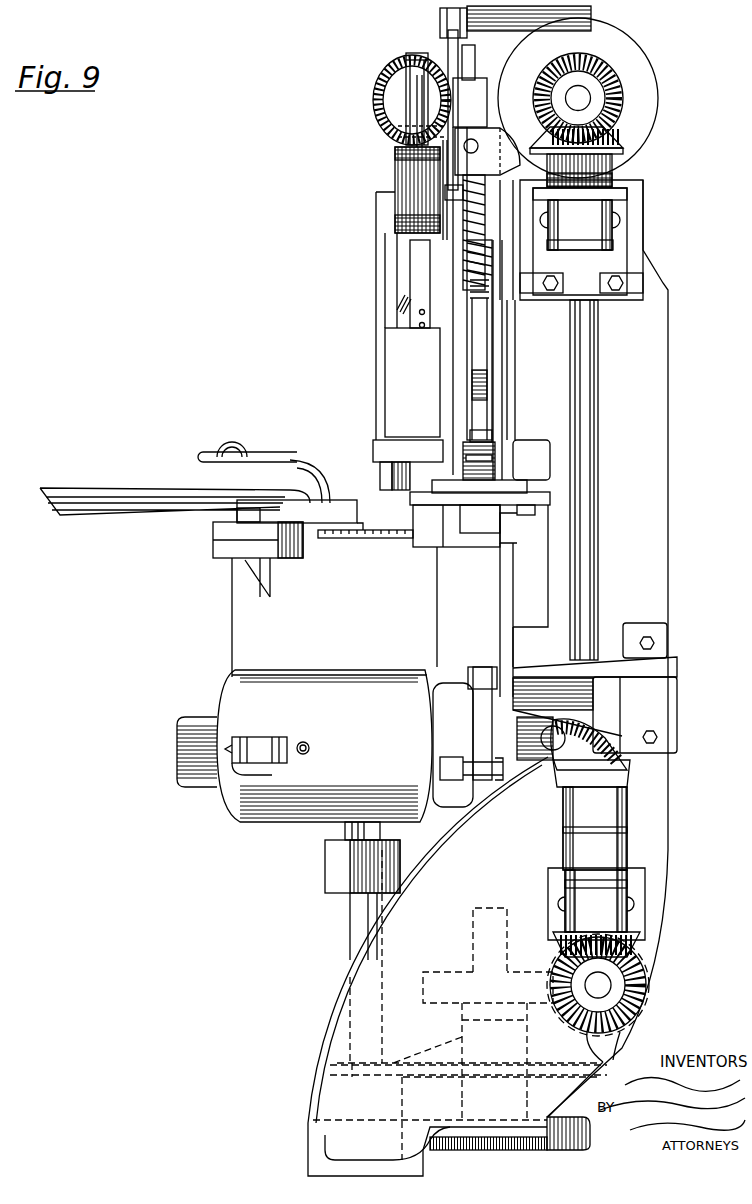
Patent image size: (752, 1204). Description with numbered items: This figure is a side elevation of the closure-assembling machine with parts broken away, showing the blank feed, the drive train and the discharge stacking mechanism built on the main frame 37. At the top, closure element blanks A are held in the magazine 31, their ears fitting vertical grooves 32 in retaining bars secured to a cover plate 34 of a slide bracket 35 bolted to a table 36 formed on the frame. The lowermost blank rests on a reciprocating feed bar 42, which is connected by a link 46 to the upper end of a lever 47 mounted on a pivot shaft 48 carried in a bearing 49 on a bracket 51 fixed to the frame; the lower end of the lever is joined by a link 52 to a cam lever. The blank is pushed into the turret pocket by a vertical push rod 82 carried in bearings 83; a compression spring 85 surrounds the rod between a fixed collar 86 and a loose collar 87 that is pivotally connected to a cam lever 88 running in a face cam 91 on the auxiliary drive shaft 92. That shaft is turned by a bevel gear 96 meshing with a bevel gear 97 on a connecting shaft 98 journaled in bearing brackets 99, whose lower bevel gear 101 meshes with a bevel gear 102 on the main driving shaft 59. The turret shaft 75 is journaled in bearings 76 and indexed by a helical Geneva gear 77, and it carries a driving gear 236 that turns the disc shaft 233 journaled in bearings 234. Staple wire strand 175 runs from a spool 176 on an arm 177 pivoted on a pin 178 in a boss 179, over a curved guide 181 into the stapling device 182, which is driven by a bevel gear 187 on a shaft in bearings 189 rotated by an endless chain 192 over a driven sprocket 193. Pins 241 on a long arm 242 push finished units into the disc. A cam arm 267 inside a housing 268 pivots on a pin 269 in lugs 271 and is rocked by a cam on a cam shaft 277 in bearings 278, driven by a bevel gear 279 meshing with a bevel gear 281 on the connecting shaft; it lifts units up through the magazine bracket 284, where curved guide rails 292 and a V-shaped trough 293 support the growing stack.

The magazine 31 is at (499, 431).
The vertical grooves 32 is at (496, 405).
The cover plate 34 is at (545, 500).
The slide bracket 35 is at (445, 528).
The table 36 is at (351, 548).
The frame 37 is at (640, 520).
The feed bar 42 is at (456, 526).
The link 46 is at (508, 538).
The lever 47 is at (505, 595).
The pivot shaft 48 is at (470, 690).
The bearing 49 is at (570, 696).
The bracket 51 is at (650, 692).
The link 52 is at (445, 768).
The main driving shaft 59 is at (600, 985).
The vertical shaft 75 is at (473, 920).
The bearings 76 is at (462, 1045).
The helical Geneva gear 77 is at (440, 975).
The push rod 82 is at (478, 358).
The bearings 83 is at (518, 384).
The compression spring 85 is at (480, 275).
The fixed collar 86 is at (478, 320).
The loose collar 87 is at (485, 180).
The cam lever 88 is at (486, 166).
The face cam 91 is at (635, 106).
The auxiliary drive shaft 92 is at (586, 98).
The bevel gear 96 is at (610, 72).
The bevel gear 97 is at (600, 137).
The connecting shaft 98 is at (582, 362).
The bearing brackets 99 is at (580, 214).
The bevel gear 101 is at (640, 936).
The bevel gear 102 is at (637, 995).
The strand 175 is at (416, 108).
The spool 176 is at (398, 208).
The arm 177 is at (450, 52).
The pivot pin 178 is at (440, 22).
The boss 179 is at (585, 15).
The curved guide 181 is at (408, 56).
The stapling device 182 is at (405, 356).
The bevel gear 187 is at (400, 108).
The bearings 189 is at (406, 106).
The endless chain 192 is at (380, 78).
The driven sprocket 193 is at (385, 92).
The vertical shaft 233 is at (345, 827).
The bearings 234 is at (325, 878).
The driving gear 236 is at (585, 1140).
The pins 241 is at (392, 481).
The long arm 242 is at (425, 452).
The cam arm 267 is at (265, 753).
The housing 268 is at (240, 690).
The pivot pin 269 is at (306, 744).
The lugs 271 is at (293, 740).
The cam shaft 277 is at (535, 752).
The bearings 278 is at (197, 757).
The bevel gear 279 is at (552, 766).
The bevel gear 281 is at (625, 772).
The magazine bracket 284 is at (215, 532).
The curved guide rails 292 is at (300, 456).
The V-shaped trough 293 is at (118, 505).
The closure element blank A is at (496, 461).